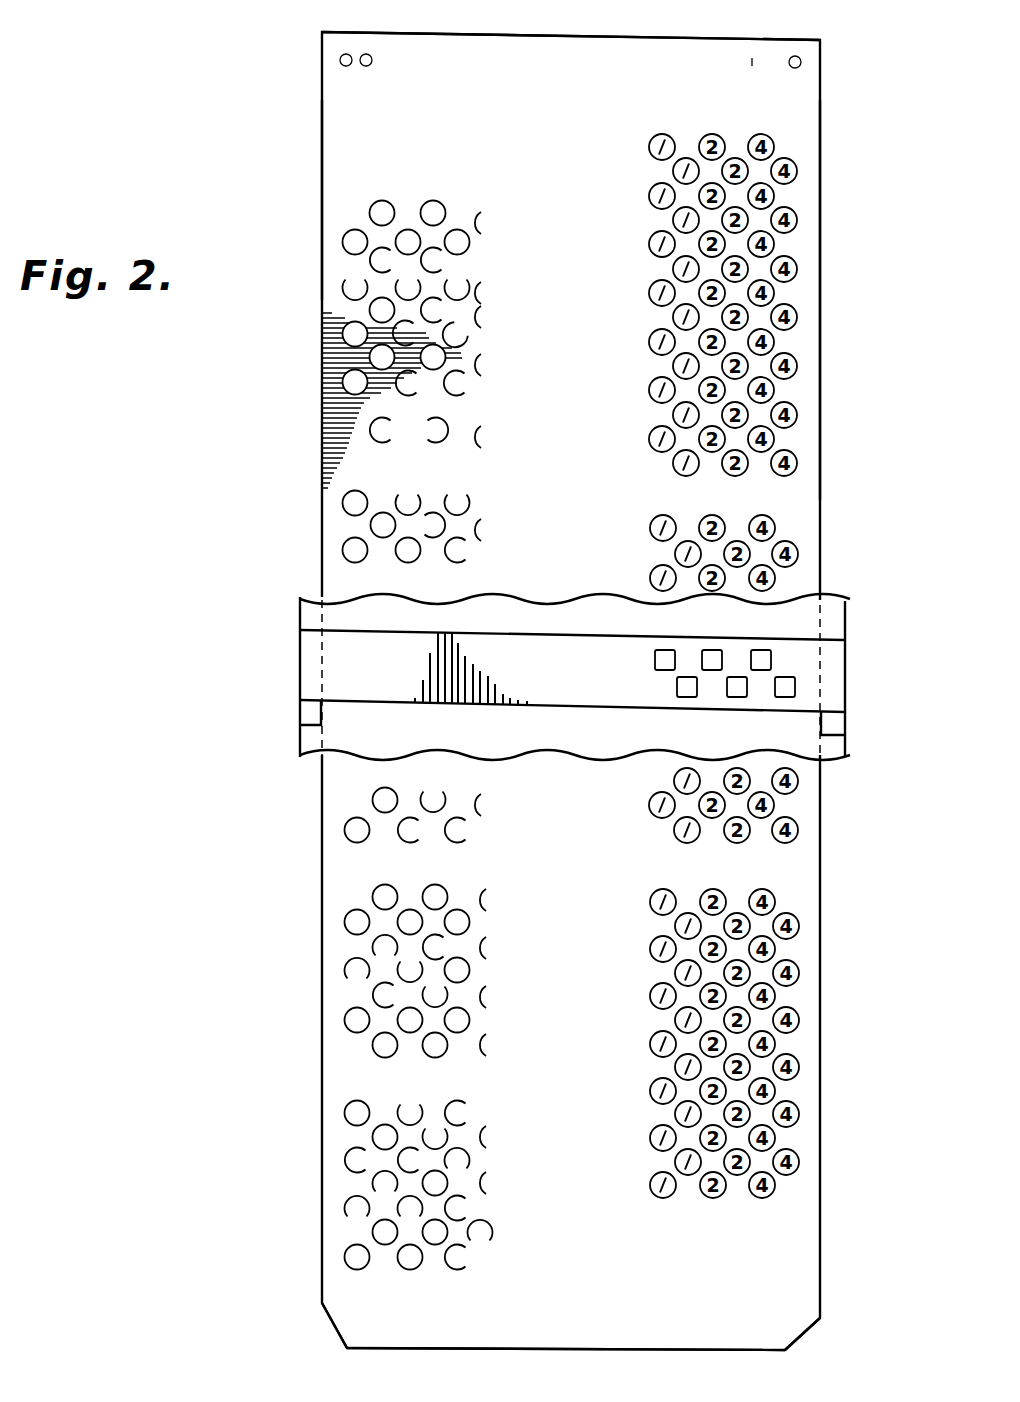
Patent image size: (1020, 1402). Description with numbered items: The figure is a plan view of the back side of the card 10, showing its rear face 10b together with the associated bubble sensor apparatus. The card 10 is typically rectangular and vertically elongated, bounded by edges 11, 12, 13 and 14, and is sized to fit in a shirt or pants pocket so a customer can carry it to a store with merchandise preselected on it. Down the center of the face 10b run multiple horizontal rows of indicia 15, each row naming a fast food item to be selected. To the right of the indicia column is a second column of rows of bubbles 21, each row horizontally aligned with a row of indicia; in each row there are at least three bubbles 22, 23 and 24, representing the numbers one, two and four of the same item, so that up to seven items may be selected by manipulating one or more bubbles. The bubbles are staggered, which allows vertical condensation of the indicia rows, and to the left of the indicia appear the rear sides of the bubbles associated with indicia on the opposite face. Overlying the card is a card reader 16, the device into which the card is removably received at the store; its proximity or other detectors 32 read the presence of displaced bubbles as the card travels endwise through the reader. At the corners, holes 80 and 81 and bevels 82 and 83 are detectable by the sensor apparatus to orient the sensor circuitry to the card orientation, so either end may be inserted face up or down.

The card 10 is at (262, 458).
The face of card 10b is at (335, 172).
The edge of card 11 is at (322, 358).
The edge of card 12 is at (822, 298).
The edge of card 13 is at (523, 34).
The edge of card 14 is at (485, 1350).
The rows of indicia 15 is at (570, 178).
The card reader 16 is at (290, 726).
The rows of bubbles 21 is at (759, 663).
The bubble 22 is at (660, 134).
The bubble 23 is at (710, 134).
The bubble 24 is at (760, 134).
The detectors 32 is at (678, 698).
The hole 80 is at (802, 62).
The hole 81 is at (340, 58).
The bevel 82 is at (328, 1322).
The bevel 83 is at (822, 1322).